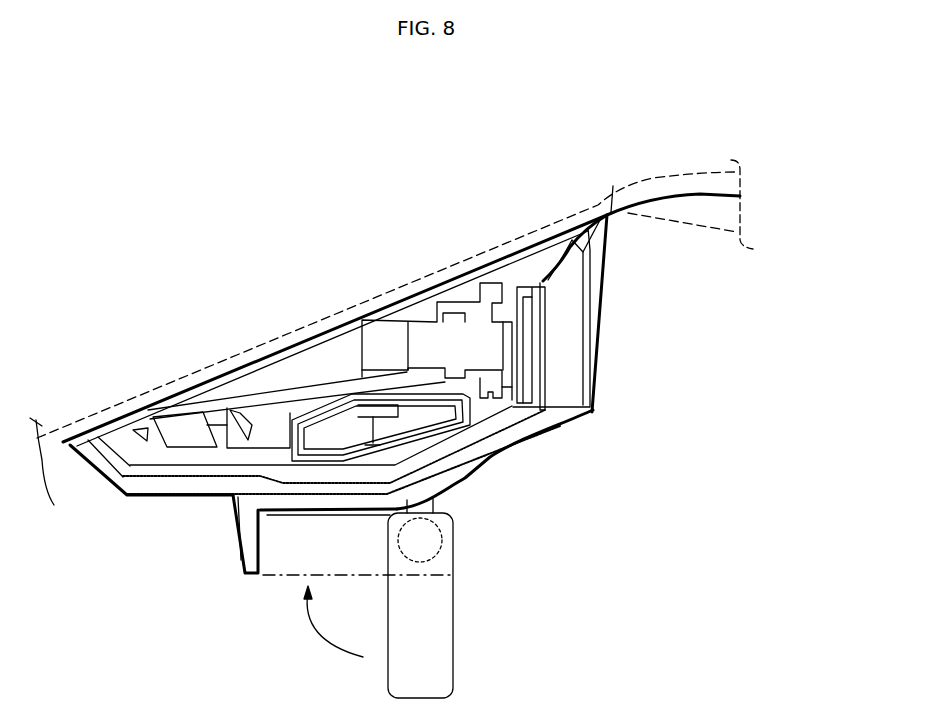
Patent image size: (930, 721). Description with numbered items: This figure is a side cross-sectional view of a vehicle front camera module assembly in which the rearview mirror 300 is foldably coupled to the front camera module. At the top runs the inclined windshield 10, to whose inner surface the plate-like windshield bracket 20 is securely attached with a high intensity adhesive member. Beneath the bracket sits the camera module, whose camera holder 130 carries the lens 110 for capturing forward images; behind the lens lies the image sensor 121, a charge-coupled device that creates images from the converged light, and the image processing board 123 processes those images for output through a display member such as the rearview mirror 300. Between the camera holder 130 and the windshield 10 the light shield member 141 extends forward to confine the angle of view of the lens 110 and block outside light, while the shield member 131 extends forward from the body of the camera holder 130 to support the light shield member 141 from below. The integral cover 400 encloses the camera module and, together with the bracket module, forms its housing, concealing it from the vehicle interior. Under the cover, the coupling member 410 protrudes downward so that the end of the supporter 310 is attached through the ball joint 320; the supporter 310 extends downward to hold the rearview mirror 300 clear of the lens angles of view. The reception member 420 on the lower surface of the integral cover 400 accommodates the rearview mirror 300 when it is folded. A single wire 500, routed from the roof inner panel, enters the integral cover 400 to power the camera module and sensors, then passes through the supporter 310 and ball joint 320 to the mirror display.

The windshield 10 is at (437, 269).
The windshield bracket 20 is at (308, 344).
The lens 110 is at (396, 352).
The image sensor 121 is at (517, 313).
The image processing board 123 is at (440, 427).
The camera holder 130 is at (547, 413).
The shield member 131 is at (145, 443).
The light shield member 141 is at (280, 376).
The rearview mirror 300 is at (440, 618).
The supporter 310 is at (443, 568).
The ball joint 320 is at (443, 543).
The integral cover 400 is at (598, 342).
The coupling member 410 is at (432, 499).
The reception member 420 is at (245, 540).
The wire 500 is at (710, 199).